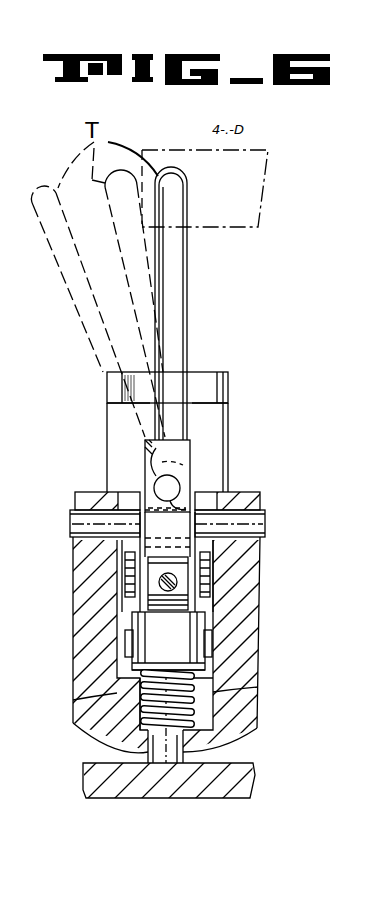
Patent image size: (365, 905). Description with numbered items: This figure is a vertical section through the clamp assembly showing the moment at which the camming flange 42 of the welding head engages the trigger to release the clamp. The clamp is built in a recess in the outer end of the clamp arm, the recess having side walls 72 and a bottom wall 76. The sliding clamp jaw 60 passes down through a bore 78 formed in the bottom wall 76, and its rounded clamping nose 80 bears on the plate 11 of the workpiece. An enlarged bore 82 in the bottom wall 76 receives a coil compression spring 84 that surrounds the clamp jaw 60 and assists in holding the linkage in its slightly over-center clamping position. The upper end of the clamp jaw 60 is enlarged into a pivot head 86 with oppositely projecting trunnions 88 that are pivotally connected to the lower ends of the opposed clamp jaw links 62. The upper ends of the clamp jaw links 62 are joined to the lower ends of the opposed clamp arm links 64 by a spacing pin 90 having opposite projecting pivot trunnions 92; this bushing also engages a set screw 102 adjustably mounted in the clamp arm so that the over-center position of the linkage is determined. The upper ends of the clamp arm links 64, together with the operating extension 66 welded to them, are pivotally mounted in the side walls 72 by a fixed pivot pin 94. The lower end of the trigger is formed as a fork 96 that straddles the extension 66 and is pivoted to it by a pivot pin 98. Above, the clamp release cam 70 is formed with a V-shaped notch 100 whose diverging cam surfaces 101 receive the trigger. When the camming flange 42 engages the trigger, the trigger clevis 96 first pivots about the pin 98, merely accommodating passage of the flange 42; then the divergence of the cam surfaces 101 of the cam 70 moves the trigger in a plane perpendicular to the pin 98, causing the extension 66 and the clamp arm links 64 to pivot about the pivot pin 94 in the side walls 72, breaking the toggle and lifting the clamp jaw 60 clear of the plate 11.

The plate 11 is at (237, 793).
The camming flange 42 is at (268, 160).
The sliding clamp jaw 60 is at (133, 737).
The clamp jaw links 62 is at (128, 667).
The clamp arm links 64 is at (120, 547).
The operating extension 66 is at (147, 470).
The clamp release cam 70 is at (236, 400).
The side walls 72 is at (75, 628).
The bottom wall 76 is at (220, 742).
The bore 78 is at (196, 735).
The rounded clamping nose 80 is at (167, 763).
The enlarged bore 82 is at (190, 694).
The coil compression spring 84 is at (118, 690).
The pivot head 86 is at (183, 621).
The trunnions 88 is at (126, 646).
The spacing pin 90 is at (183, 568).
The pivot trunnions 92 is at (127, 585).
The pivot pin 94 is at (263, 509).
The fork 96 is at (185, 450).
The pivot pin 98 is at (177, 484).
The V-shaped notch 100 is at (218, 395).
The cam surfaces 101 is at (155, 378).
The set screw 102 is at (160, 577).